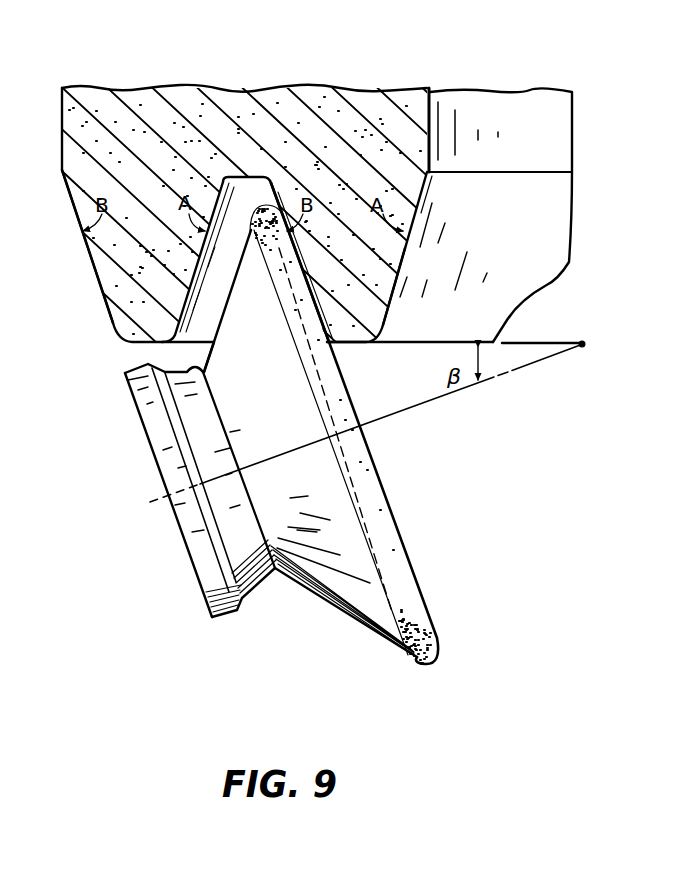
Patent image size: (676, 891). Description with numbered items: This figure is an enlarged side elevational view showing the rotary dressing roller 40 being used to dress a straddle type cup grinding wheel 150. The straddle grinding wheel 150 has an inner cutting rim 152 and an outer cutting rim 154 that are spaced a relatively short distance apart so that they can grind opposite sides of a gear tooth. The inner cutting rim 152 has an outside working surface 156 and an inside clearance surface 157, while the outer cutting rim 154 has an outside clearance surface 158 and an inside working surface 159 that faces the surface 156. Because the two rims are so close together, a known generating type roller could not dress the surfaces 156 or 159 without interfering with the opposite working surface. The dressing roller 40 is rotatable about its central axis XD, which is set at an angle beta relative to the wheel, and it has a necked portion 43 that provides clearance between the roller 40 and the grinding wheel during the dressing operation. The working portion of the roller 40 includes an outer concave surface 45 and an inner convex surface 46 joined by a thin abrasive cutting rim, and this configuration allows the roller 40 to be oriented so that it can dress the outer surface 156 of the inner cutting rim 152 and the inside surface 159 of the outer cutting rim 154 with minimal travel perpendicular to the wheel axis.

The rotary dressing roller 40 is at (348, 423).
The necked portion 43 is at (203, 372).
The outer concave surface 45 is at (318, 381).
The inner convex surface 46 is at (227, 273).
The straddle type cup grinding wheel 150 is at (490, 97).
The inner cutting rim 152 is at (388, 248).
The outer cutting rim 154 is at (103, 259).
The outside working surface 156 is at (300, 284).
The inside clearance surface 157 is at (388, 303).
The outside clearance surface 158 is at (110, 311).
The inside working surface 159 is at (218, 331).